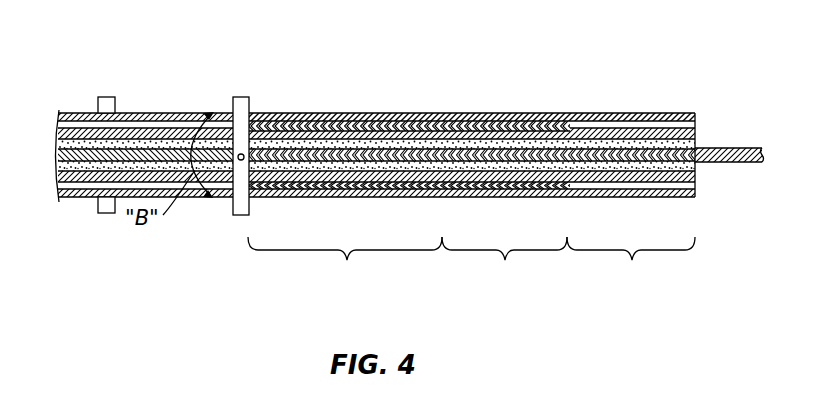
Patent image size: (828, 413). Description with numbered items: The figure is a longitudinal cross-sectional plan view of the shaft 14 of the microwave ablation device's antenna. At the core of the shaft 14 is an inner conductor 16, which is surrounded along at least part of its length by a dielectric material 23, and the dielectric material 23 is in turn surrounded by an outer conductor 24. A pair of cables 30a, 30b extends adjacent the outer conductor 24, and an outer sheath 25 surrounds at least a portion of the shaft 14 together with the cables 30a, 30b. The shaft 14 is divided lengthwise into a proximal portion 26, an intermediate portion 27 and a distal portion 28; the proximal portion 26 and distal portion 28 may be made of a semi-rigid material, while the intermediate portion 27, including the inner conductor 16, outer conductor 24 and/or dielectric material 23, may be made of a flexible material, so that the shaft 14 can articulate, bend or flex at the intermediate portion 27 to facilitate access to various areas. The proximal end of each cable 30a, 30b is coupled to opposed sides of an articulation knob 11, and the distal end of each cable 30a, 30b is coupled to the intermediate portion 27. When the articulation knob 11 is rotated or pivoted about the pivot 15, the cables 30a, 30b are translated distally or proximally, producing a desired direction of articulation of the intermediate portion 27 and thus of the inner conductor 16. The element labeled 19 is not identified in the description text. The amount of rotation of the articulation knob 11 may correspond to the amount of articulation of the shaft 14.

The shaft 14 is at (560, 63).
The articulation knob 11 is at (240, 97).
The pivot 15 is at (240, 161).
The inner conductor 16 is at (437, 157).
The connector blocks 19 is at (107, 97).
The dielectric material 23 is at (527, 145).
The outer conductor 24 is at (620, 140).
The outer sheath 25 is at (373, 117).
The proximal portion 26 is at (345, 266).
The intermediate portion 27 is at (504, 266).
The distal portion 28 is at (631, 266).
The cable 30a is at (285, 125).
The cable 30b is at (285, 185).